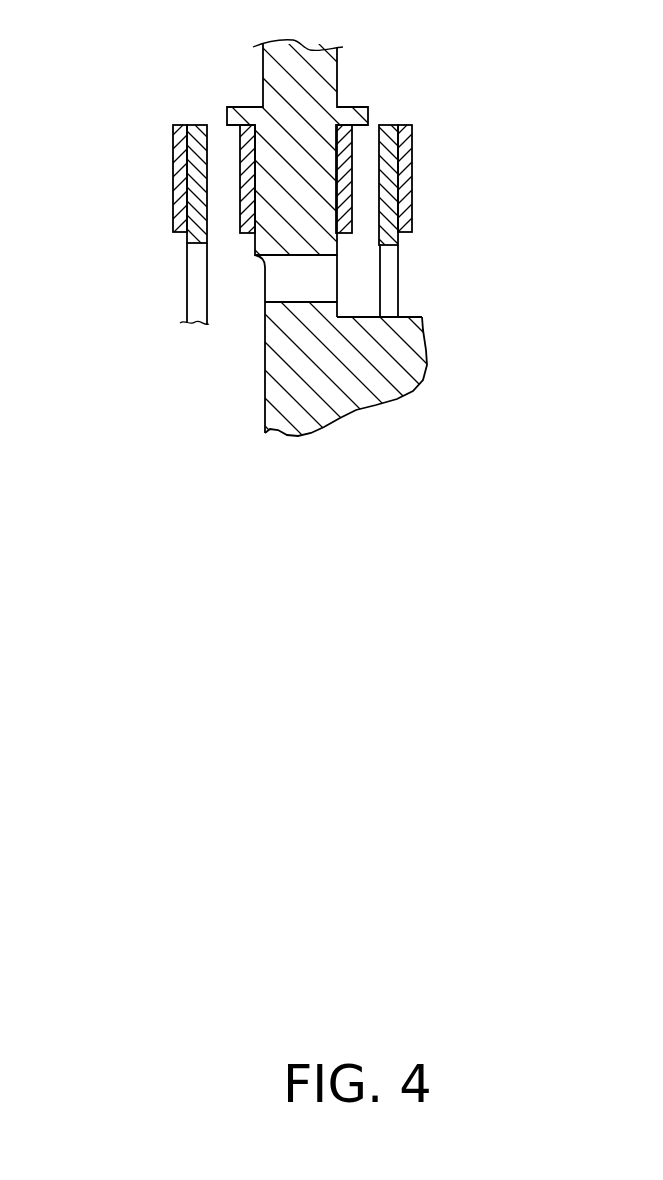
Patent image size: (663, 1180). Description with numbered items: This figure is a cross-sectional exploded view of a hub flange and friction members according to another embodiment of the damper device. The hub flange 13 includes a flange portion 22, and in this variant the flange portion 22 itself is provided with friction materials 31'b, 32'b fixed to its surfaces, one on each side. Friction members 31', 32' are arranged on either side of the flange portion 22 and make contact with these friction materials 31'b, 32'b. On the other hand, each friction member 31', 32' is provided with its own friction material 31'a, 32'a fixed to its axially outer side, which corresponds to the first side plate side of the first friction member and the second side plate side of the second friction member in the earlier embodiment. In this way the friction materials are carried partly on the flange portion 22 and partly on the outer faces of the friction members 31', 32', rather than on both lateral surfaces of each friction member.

The hub flange 13 is at (432, 313).
The flange portion 22 is at (318, 74).
The friction member 31' is at (469, 187).
The friction material 31'a is at (469, 189).
The friction material 31'b is at (433, 176).
The friction member 32' is at (122, 188).
The friction material 32'a is at (121, 185).
The friction material 32'b is at (181, 129).